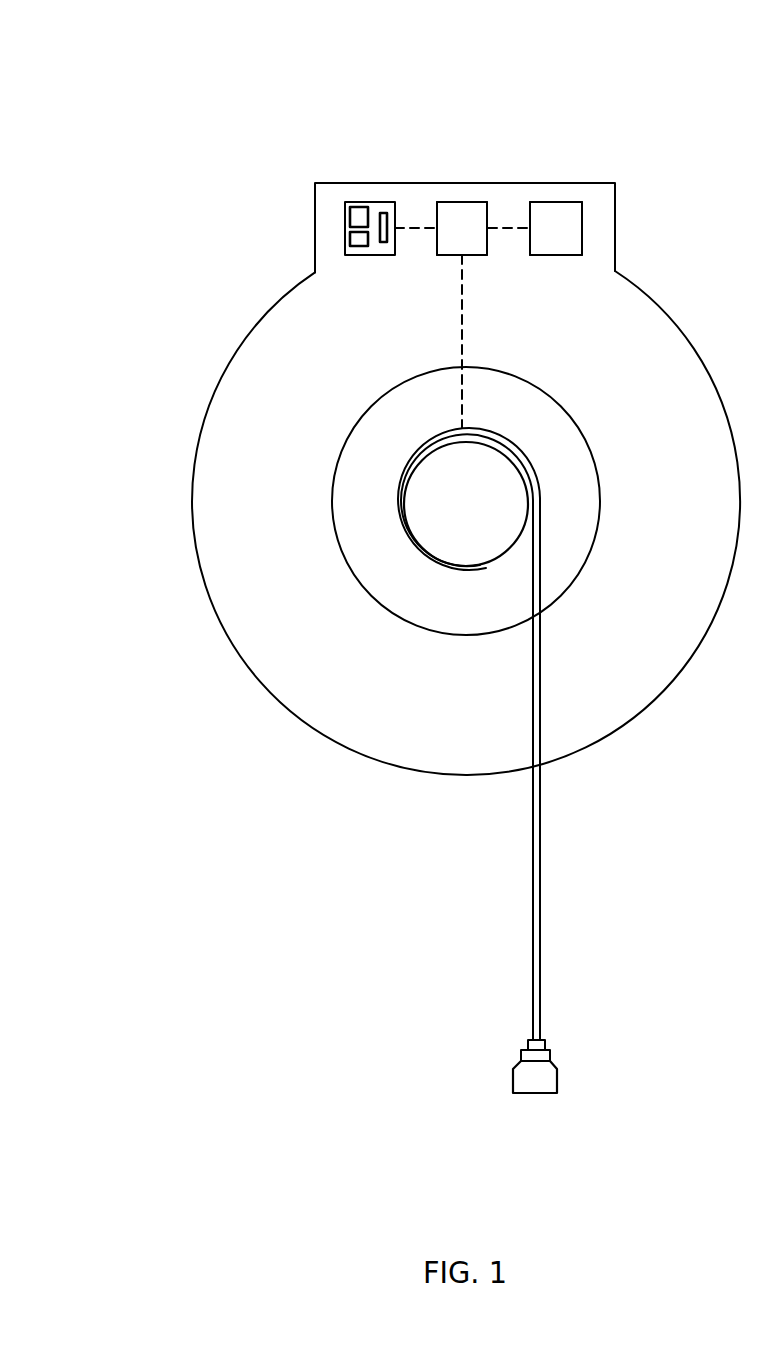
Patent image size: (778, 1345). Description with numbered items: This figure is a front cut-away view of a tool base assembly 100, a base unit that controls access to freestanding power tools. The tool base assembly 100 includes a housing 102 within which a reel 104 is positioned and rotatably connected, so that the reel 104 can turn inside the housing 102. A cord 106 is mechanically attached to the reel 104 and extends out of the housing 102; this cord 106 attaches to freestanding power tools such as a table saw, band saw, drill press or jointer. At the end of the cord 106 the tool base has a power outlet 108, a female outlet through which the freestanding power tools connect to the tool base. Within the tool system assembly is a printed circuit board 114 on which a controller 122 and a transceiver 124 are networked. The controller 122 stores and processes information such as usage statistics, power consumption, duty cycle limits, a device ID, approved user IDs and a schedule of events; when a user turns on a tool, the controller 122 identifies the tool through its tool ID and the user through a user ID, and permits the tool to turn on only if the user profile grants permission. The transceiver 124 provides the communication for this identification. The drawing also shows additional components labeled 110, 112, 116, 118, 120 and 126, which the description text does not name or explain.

The tool base assembly 100 is at (150, 74).
The housing 102 is at (466, 479).
The reel 104 is at (466, 501).
The cord 106 is at (540, 884).
The power outlet 108 is at (557, 1066).
The control unit 110 is at (582, 215).
The controller 112 is at (477, 255).
The printed circuit board 114 is at (345, 242).
The power supply module 116 is at (513, 227).
The wiring connection 118 is at (458, 328).
The controller module 120 is at (420, 227).
The controller 122 is at (347, 207).
The transceiver 124 is at (352, 248).
The indicator 126 is at (380, 210).